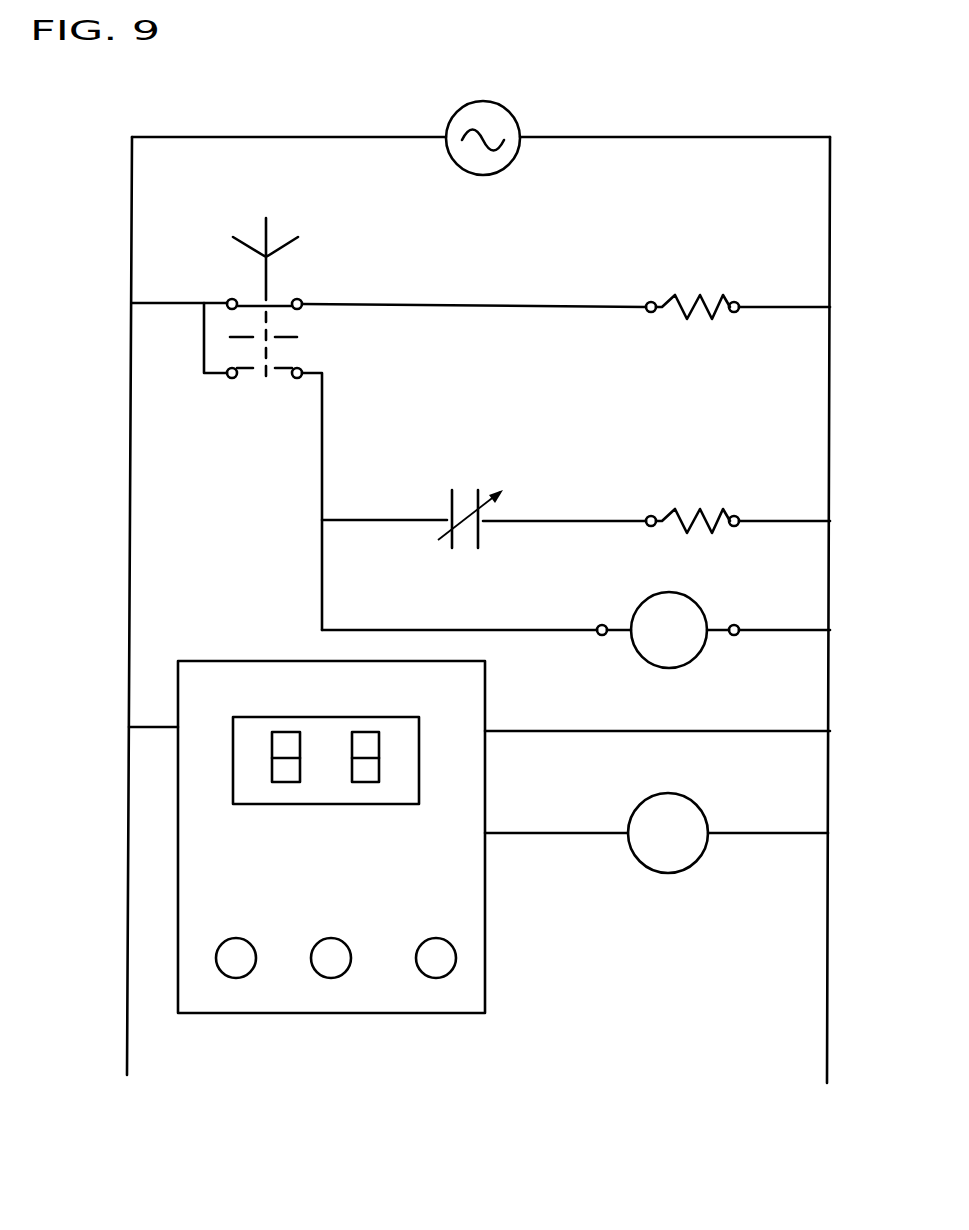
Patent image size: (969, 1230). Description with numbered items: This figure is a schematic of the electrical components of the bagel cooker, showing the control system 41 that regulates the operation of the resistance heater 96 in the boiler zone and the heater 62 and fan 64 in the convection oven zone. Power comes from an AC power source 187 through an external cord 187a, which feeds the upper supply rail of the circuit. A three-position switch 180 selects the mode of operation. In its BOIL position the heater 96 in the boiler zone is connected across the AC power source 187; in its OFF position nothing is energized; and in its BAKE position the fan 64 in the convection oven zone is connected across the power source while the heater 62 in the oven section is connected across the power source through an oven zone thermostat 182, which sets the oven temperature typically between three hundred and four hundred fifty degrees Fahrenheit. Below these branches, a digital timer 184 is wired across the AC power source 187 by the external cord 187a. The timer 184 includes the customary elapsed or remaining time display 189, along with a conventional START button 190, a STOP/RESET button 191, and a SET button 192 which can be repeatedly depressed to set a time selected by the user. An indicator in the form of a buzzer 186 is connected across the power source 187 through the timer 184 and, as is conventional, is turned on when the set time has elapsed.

The control system 41 is at (124, 630).
The AC power source 187 is at (478, 102).
The external cord 187a is at (345, 136).
The three-position switch 180 is at (258, 185).
The resistance heater 96 is at (677, 313).
The oven zone thermostat 182 is at (450, 508).
The heater 62 is at (698, 527).
The fan 64 is at (660, 592).
The digital timer 184 is at (176, 860).
The time display 189 is at (233, 757).
The buzzer 186 is at (633, 812).
The START button 190 is at (243, 973).
The STOP/RESET button 191 is at (337, 973).
The SET button 192 is at (443, 973).